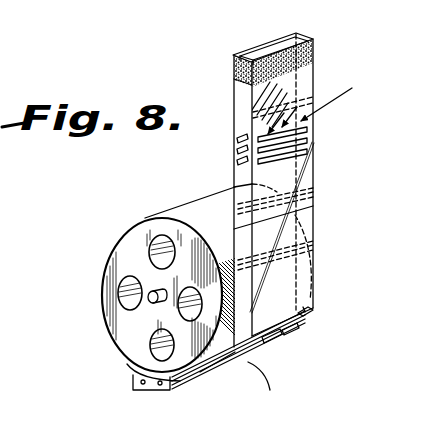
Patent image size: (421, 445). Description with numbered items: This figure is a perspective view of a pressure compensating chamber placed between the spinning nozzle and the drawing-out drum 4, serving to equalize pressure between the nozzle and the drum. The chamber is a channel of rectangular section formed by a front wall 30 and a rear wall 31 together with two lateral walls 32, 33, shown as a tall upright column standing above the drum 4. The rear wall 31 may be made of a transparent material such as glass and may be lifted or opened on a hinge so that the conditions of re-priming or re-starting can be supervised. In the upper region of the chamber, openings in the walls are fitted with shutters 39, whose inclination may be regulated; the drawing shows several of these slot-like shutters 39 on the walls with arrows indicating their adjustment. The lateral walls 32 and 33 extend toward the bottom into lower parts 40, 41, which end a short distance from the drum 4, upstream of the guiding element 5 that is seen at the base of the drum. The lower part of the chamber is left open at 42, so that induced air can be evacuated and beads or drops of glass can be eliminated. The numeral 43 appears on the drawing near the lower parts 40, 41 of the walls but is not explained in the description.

The reel 4 is at (123, 243).
The bracket 5 is at (172, 383).
The column housing 30 is at (270, 38).
The filter material 31 is at (289, 60).
The side wall 32 is at (234, 62).
The top opening rim 33 is at (304, 37).
The slots 39 is at (235, 158).
The base rail 40 is at (235, 362).
The rail end fitting 41 is at (305, 311).
The rod 42 is at (282, 227).
The rail blocks 43 is at (301, 325).